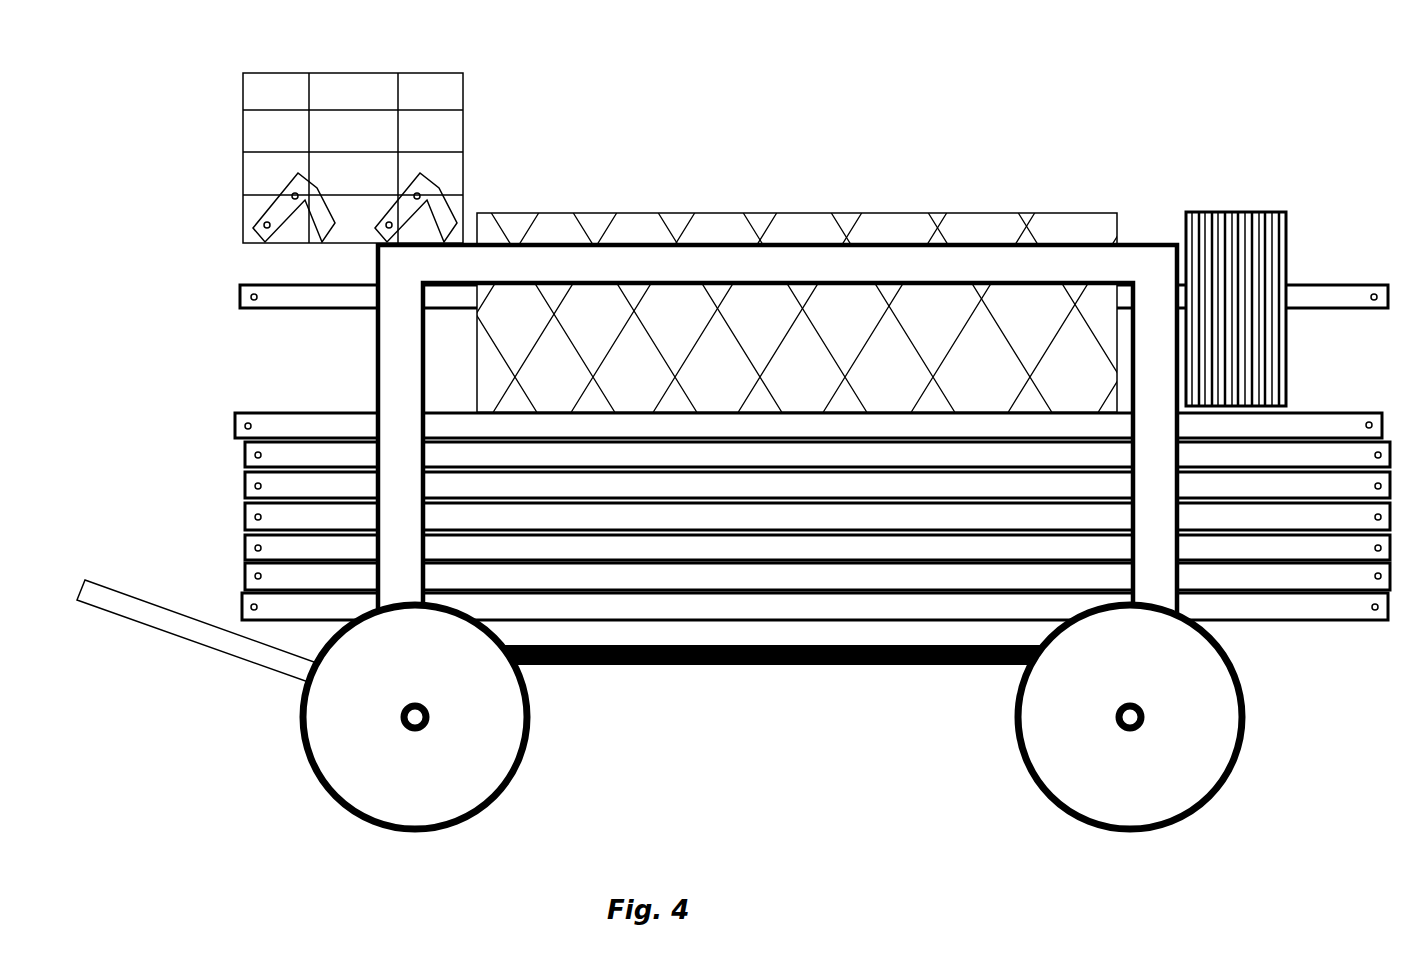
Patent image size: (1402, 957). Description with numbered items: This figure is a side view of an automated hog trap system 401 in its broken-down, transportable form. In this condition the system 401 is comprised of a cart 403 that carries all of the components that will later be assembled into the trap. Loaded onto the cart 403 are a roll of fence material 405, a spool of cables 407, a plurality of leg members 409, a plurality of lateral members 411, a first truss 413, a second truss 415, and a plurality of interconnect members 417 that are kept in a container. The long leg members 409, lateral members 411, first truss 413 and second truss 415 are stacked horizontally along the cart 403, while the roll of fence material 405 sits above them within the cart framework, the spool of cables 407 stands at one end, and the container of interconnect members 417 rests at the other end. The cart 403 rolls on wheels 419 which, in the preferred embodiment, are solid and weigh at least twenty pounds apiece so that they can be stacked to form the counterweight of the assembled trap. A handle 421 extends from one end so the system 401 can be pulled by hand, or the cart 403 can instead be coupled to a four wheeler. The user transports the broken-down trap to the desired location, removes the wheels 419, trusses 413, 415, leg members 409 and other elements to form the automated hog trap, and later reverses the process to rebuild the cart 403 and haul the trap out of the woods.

The system 401 is at (1122, 52).
The cart 403 is at (853, 667).
The roll of fence material 405 is at (805, 212).
The spool of cables 407 is at (1245, 212).
The leg members 409 is at (1369, 285).
The lateral members 411 is at (317, 413).
The first truss 413 is at (242, 608).
The second truss 415 is at (245, 577).
The interconnect members 417 is at (447, 130).
The wheels 419 is at (310, 747).
The handle 421 is at (228, 652).